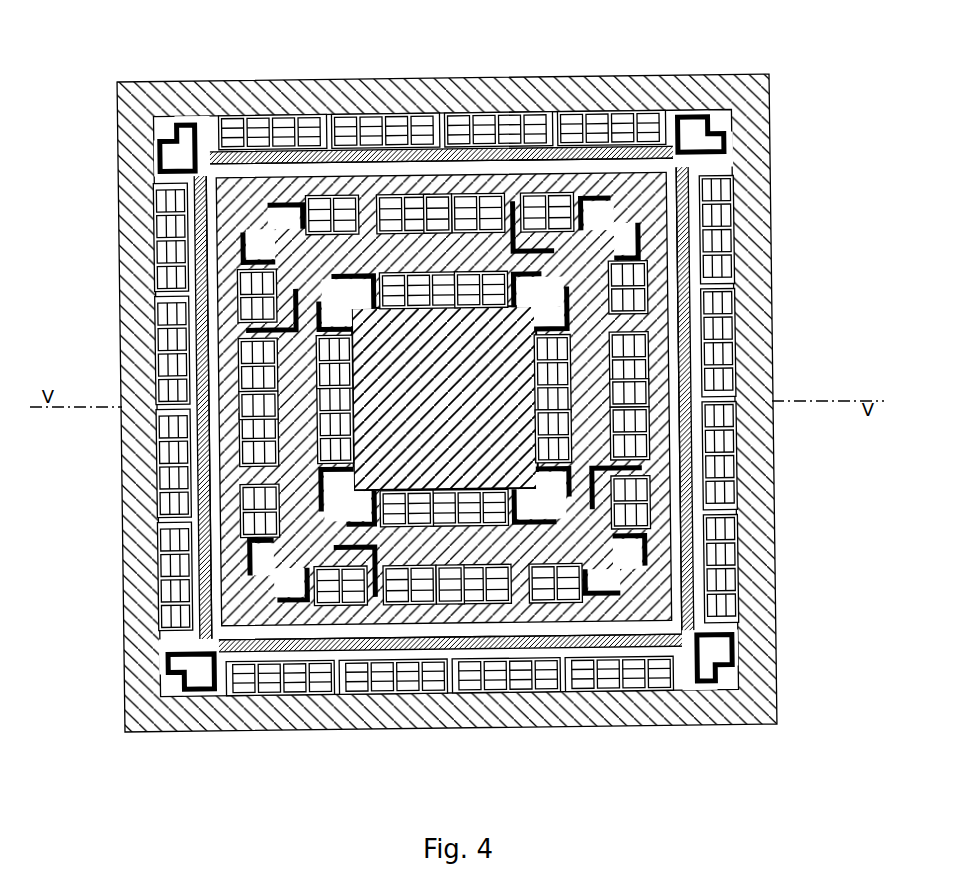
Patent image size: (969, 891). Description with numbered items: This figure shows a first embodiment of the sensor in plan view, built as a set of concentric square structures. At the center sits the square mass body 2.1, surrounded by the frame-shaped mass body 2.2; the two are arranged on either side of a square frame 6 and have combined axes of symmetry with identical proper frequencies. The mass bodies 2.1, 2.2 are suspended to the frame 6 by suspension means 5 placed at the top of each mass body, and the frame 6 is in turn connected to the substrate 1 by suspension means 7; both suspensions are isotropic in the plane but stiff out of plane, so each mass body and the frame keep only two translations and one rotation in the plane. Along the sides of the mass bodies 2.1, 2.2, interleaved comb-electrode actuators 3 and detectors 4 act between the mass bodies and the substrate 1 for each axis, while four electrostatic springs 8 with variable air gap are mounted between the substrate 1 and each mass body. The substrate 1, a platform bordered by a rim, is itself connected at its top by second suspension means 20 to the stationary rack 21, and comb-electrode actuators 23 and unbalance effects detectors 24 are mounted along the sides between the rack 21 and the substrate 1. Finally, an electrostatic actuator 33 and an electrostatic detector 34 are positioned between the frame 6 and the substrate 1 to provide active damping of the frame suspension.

The substrate 1 is at (540, 180).
The mass body 2.1 is at (680, 415).
The mass body 2.2 is at (690, 372).
The electrostatic actuator 3 is at (322, 440).
The electrostatic detector 4 is at (330, 395).
The suspension means 5 is at (282, 200).
The frame 6 is at (473, 488).
The suspension means 7 is at (385, 215).
The electrostatic spring 8 is at (348, 200).
The second suspension means 20 is at (205, 135).
The stationary rack 21 is at (752, 540).
The actuator 23 is at (185, 445).
The unbalance effects detector 24 is at (185, 560).
The electrostatic actuator 33 is at (700, 392).
The electrostatic detector 34 is at (700, 440).